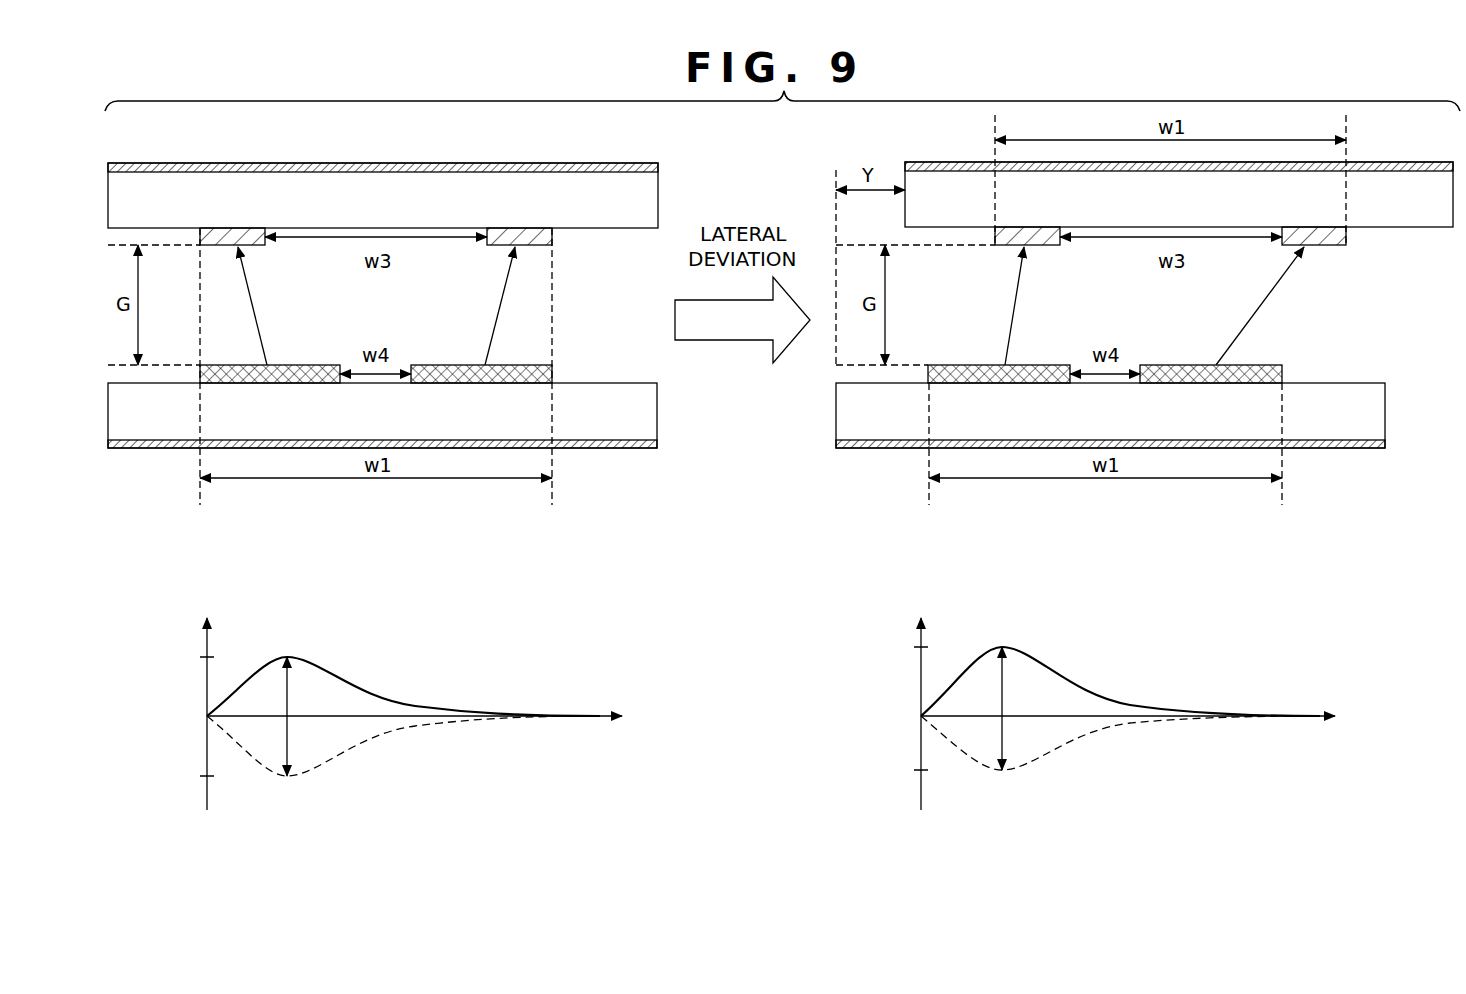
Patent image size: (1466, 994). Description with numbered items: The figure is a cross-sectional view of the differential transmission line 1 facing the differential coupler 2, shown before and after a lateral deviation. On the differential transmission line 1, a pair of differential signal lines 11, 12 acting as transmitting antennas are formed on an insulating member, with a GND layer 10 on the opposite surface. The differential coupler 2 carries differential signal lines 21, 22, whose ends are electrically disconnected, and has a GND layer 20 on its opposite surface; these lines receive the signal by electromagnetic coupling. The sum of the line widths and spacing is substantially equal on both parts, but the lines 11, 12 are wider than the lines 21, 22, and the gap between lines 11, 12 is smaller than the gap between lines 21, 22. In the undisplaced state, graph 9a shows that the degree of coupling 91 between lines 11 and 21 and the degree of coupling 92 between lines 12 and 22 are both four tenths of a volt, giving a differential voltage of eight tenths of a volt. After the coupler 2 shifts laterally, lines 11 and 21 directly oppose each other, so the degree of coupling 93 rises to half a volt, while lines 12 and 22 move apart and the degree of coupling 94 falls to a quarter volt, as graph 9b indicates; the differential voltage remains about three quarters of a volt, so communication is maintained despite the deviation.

The differential transmission line 1 is at (650, 413).
The differential coupler 2 is at (658, 183).
The GND layer 10 is at (580, 448).
The differential signal line 11 is at (226, 365).
The differential signal line 12 is at (552, 376).
The GND layer 20 is at (582, 163).
The differential signal line 21 is at (222, 248).
The differential signal line 22 is at (552, 240).
The degree of coupling 91 is at (260, 333).
The degree of coupling 92 is at (474, 330).
The degree of coupling 93 is at (1012, 304).
The degree of coupling 94 is at (1262, 304).
The degree of coupling in terms of voltage 9a is at (432, 745).
The degree of coupling in terms of voltage 9b is at (1144, 740).